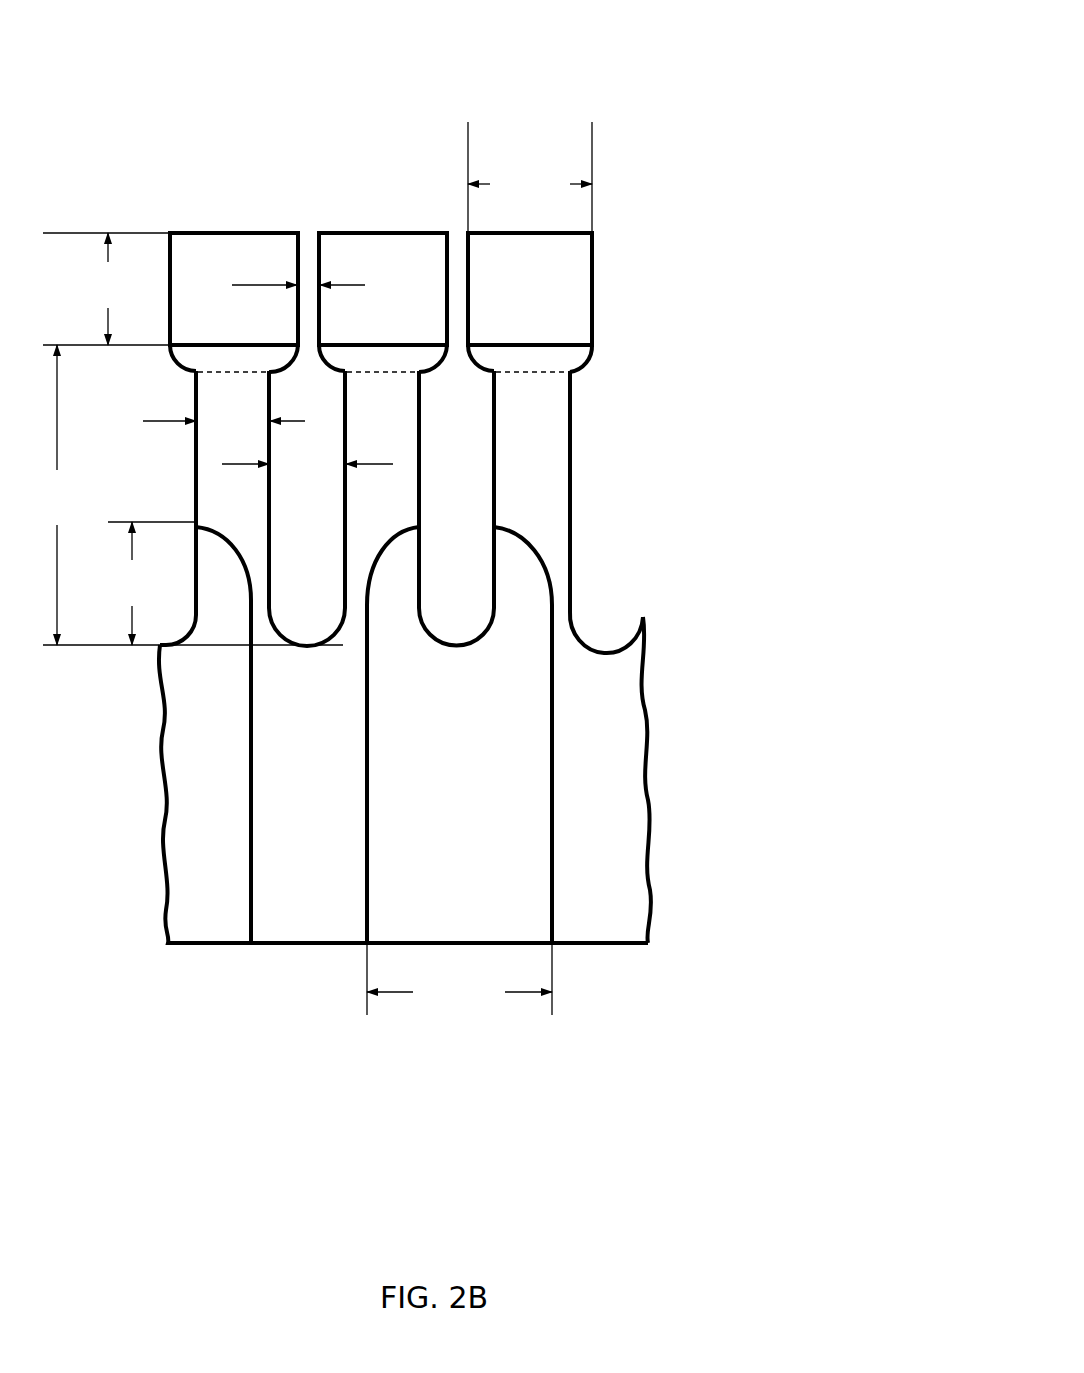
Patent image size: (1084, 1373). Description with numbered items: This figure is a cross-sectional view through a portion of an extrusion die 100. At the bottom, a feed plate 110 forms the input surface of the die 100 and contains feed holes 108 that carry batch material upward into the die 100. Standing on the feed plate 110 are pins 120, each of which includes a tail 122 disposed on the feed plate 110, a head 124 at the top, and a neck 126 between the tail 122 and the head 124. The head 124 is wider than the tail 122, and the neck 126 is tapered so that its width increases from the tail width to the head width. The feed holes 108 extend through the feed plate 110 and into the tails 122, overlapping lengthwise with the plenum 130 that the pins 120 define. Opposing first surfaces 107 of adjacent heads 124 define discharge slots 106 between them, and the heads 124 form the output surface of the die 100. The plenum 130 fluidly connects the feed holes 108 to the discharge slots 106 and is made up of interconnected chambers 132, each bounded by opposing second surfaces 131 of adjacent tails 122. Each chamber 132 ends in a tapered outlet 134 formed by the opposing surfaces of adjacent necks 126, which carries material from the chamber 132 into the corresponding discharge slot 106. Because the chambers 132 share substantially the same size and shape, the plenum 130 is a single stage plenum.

The die 100 is at (452, 33).
The discharge slot 106 is at (457, 232).
The first surface 107 is at (447, 290).
The feed hole 108 is at (518, 781).
The feed plate 110 is at (655, 901).
The pin 120 is at (828, 261).
The tail 122 is at (570, 405).
The head 124 is at (592, 289).
The neck 126 is at (553, 358).
The plenum 130 is at (828, 533).
The second surface 131 is at (420, 521).
The chamber 132 is at (473, 497).
The tapered outlet 134 is at (469, 372).